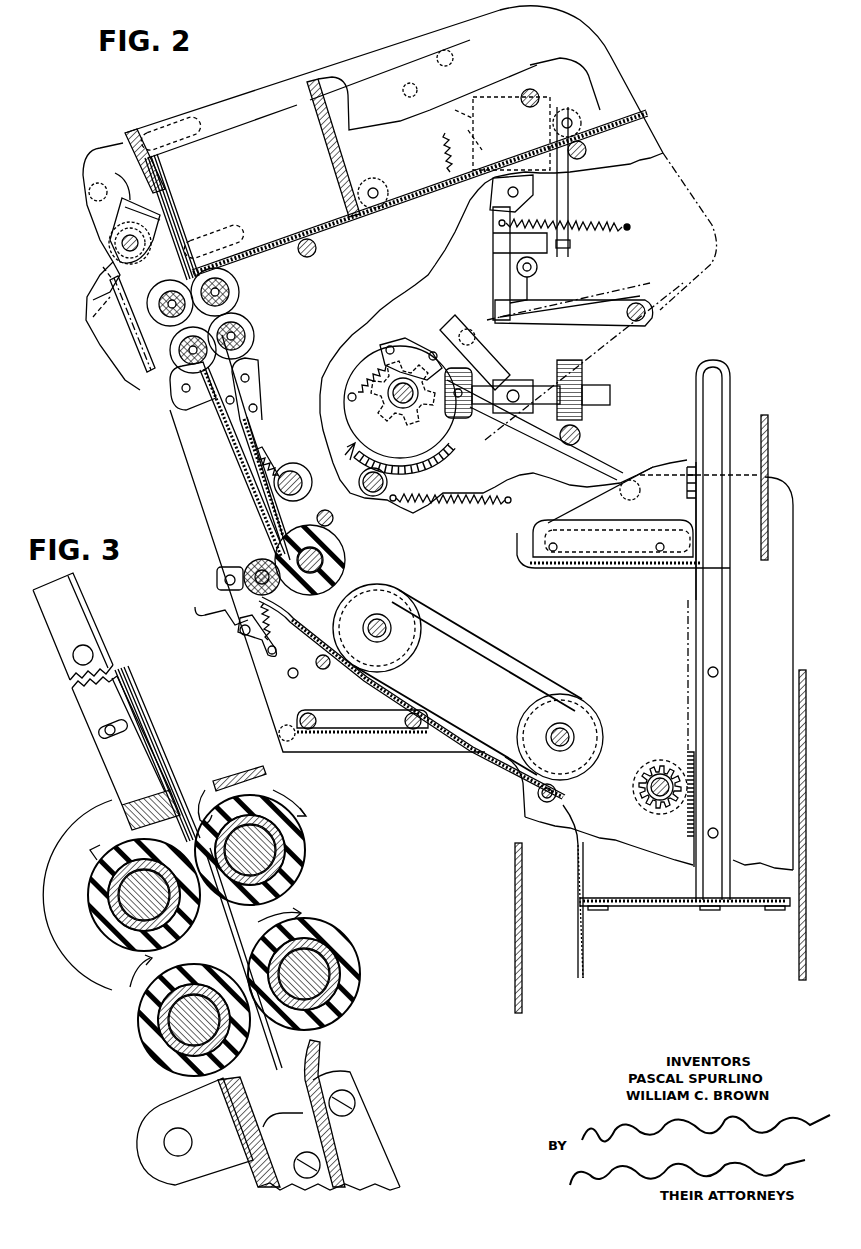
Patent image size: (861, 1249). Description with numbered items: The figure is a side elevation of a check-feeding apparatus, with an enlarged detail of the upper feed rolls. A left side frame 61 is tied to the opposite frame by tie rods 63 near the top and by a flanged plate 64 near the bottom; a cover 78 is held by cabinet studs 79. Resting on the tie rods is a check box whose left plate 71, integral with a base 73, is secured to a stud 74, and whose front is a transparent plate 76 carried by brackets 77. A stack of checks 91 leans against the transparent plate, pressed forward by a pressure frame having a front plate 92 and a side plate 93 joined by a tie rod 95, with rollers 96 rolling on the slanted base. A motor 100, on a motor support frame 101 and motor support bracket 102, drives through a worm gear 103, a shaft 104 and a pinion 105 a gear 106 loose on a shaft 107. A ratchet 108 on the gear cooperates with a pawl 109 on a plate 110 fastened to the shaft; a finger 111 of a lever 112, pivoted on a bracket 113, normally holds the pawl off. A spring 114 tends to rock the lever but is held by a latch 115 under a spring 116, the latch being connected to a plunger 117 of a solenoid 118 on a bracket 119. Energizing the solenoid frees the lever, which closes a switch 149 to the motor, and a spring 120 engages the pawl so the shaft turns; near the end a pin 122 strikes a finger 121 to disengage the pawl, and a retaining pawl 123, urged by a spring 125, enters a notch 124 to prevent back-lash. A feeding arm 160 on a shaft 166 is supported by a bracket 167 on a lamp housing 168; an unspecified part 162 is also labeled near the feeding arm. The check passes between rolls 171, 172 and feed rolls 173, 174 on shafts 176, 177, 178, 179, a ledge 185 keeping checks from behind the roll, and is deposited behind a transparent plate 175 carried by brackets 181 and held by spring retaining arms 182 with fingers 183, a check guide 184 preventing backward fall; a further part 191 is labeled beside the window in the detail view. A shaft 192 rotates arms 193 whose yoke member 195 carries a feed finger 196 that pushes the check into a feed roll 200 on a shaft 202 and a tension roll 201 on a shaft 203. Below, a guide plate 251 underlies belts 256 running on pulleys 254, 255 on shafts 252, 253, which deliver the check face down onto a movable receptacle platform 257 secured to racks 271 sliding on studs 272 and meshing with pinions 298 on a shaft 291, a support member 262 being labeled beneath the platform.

In FIG. 2, the left side frame 61 is at (647, 147).
In FIG. 2, the tie rods 63 is at (317, 250).
In FIG. 2, the flanged plate 64 is at (364, 735).
In FIG. 2, the left plate 71 is at (383, 50).
In FIG. 2, the base 73 is at (247, 258).
In FIG. 3, the base 73 is at (248, 775).
In FIG. 2, the stud 74 is at (402, 92).
In FIG. 2, the transparent plate 76 is at (122, 135).
In FIG. 3, the brackets 77 is at (88, 600).
In FIG. 2, the cabinet or cover 78 is at (797, 950).
In FIG. 2, the cabinet studs 79 is at (448, 55).
In FIG. 2, the checks 91 is at (168, 160).
In FIG. 3, the checks 91 is at (140, 705).
In FIG. 2, the front plate 92 is at (307, 82).
In FIG. 2, the side plate 93 is at (552, 72).
In FIG. 2, the tie rod 95 is at (530, 90).
In FIG. 2, the rollers 96 is at (370, 182).
In FIG. 2, the motor 100 is at (663, 467).
In FIG. 2, the motor support frame 101 is at (622, 570).
In FIG. 2, the motor support bracket 102 is at (552, 525).
In FIG. 2, the worm gear 103 is at (583, 368).
In FIG. 2, the shaft 104 is at (612, 395).
In FIG. 2, the pinion 105 is at (470, 410).
In FIG. 2, the gear 106 is at (355, 445).
In FIG. 2, the shaft 107 is at (388, 396).
In FIG. 2, the ratchet 108 is at (356, 390).
In FIG. 2, the pawl 109 is at (413, 325).
In FIG. 2, the plate 110 is at (380, 357).
In FIG. 2, the finger 111 is at (443, 323).
In FIG. 2, the lever 112 is at (500, 317).
In FIG. 2, the bracket 113 is at (643, 340).
In FIG. 2, the spring 114 is at (607, 228).
In FIG. 2, the latch 115 is at (559, 192).
In FIG. 2, the spring 116 is at (440, 145).
In FIG. 2, the plunger 117 is at (485, 195).
In FIG. 2, the solenoid 118 is at (497, 95).
In FIG. 2, the bracket 119 is at (455, 110).
In FIG. 2, the spring 120 is at (386, 378).
In FIG. 2, the finger 121 is at (438, 430).
In FIG. 2, the pin 122 is at (400, 432).
In FIG. 2, the retaining pawl 123 is at (386, 492).
In FIG. 2, the notch 124 is at (448, 420).
In FIG. 2, the spring 125 is at (398, 500).
In FIG. 2, the switch 149 is at (570, 248).
In FIG. 2, the feeding arm 160 is at (118, 220).
In FIG. 2, the bracket 162 is at (118, 175).
In FIG. 2, the shaft 166 is at (123, 245).
In FIG. 2, the bracket 167 is at (92, 293).
In FIG. 2, the lamp housing 168 is at (102, 360).
In FIG. 2, the roll 171 is at (160, 300).
In FIG. 3, the roll 171 is at (97, 923).
In FIG. 2, the roll 172 is at (232, 285).
In FIG. 3, the roll 172 is at (305, 827).
In FIG. 2, the feed roll 173 is at (175, 352).
In FIG. 3, the feed roll 173 is at (148, 1027).
In FIG. 2, the feed roll 174 is at (248, 326).
In FIG. 3, the feed roll 174 is at (340, 935).
In FIG. 2, the transparent plate 175 is at (220, 425).
In FIG. 3, the transparent plate 175 is at (258, 1170).
In FIG. 2, the shaft 176 is at (158, 317).
In FIG. 3, the shaft 176 is at (115, 895).
In FIG. 2, the shaft 177 is at (231, 293).
In FIG. 3, the shaft 177 is at (276, 845).
In FIG. 2, the shaft 178 is at (183, 363).
In FIG. 3, the shaft 178 is at (165, 1012).
In FIG. 2, the shaft 179 is at (247, 337).
In FIG. 3, the shaft 179 is at (328, 963).
In FIG. 2, the brackets 181 is at (182, 397).
In FIG. 3, the brackets 181 is at (150, 1130).
In FIG. 2, the spring retaining arms 182 is at (238, 618).
In FIG. 2, the fingers 183 is at (203, 605).
In FIG. 2, the check guide 184 is at (254, 379).
In FIG. 3, the ledge 185 is at (205, 820).
In FIG. 3, the guide 191 is at (320, 1055).
In FIG. 2, the shaft 192 is at (272, 460).
In FIG. 2, the arms 193 is at (300, 493).
In FIG. 2, the yoke member 195 is at (312, 457).
In FIG. 2, the feed finger 196 is at (260, 457).
In FIG. 2, the feed roll 200 is at (343, 556).
In FIG. 2, the tension roll 201 is at (276, 598).
In FIG. 2, the shaft 202 is at (320, 550).
In FIG. 2, the shaft 203 is at (218, 571).
In FIG. 2, the guide plate 251 is at (364, 680).
In FIG. 2, the shaft 252 is at (388, 634).
In FIG. 2, the shaft 253 is at (553, 730).
In FIG. 2, the pulleys 254 is at (397, 610).
In FIG. 2, the pulleys 255 is at (563, 703).
In FIG. 2, the belt 256 is at (490, 640).
In FIG. 2, the movable receptacle platform 257 is at (673, 898).
In FIG. 2, the support 262 is at (581, 945).
In FIG. 2, the racks 271 is at (731, 617).
In FIG. 2, the studs 272 is at (719, 673).
In FIG. 2, the shaft 291 is at (655, 785).
In FIG. 2, the pinions 298 is at (633, 797).